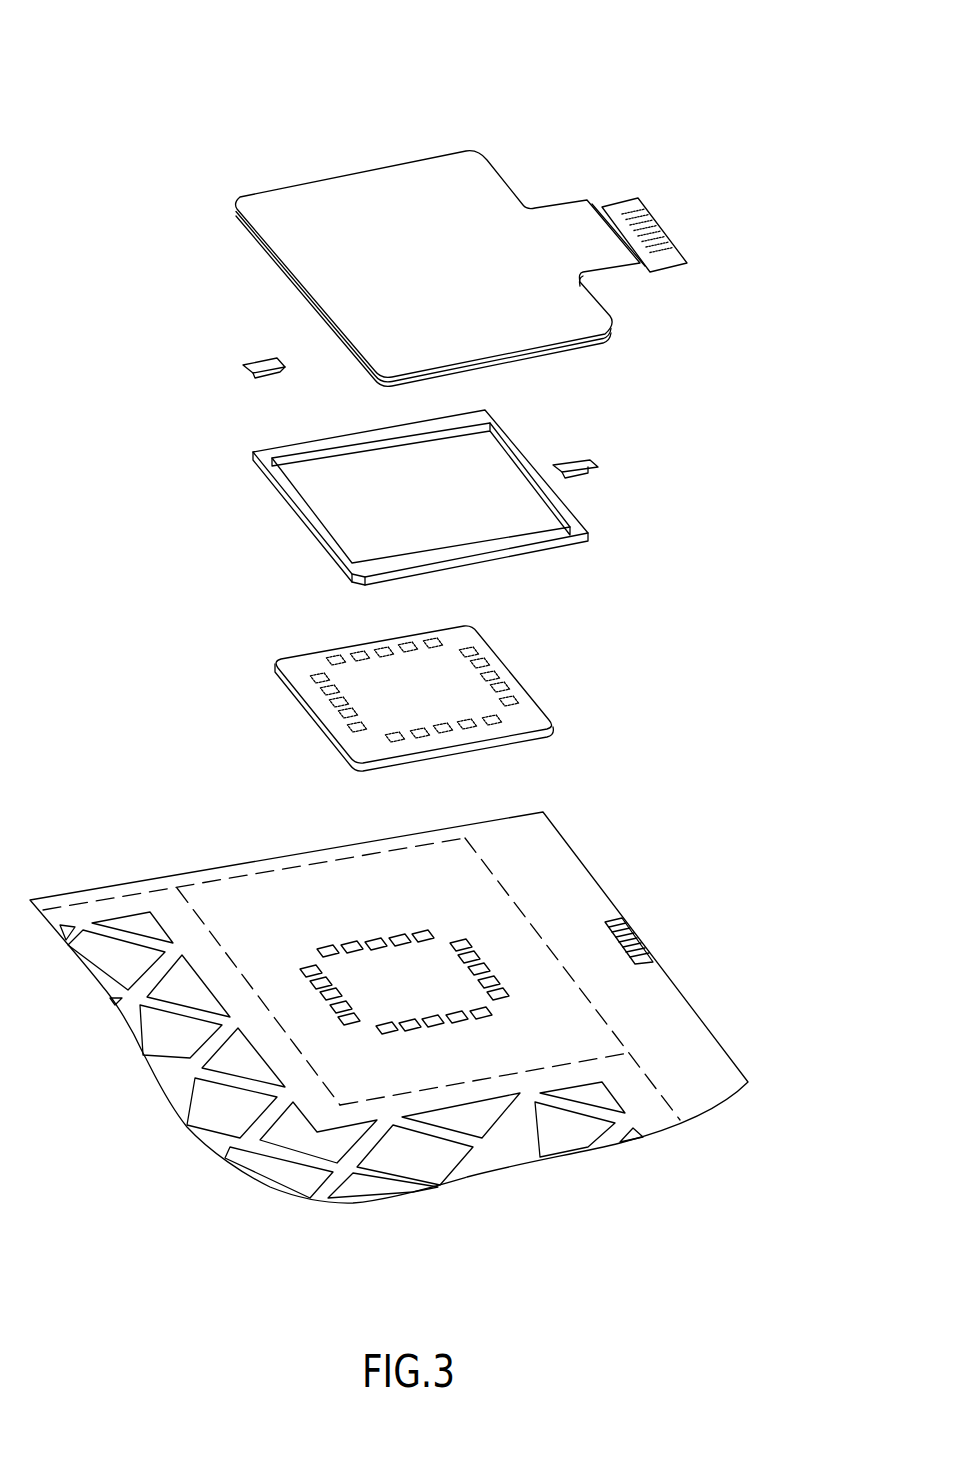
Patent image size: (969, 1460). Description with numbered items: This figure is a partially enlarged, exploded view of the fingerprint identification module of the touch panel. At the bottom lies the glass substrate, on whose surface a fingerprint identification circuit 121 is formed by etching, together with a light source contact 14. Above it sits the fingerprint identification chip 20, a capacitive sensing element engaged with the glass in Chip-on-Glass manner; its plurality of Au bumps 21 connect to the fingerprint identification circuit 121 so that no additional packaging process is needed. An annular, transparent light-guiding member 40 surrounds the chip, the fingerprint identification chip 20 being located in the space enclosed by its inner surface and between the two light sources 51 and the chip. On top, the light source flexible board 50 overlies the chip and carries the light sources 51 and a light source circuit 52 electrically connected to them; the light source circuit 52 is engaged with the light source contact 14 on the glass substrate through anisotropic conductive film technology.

The light source flexible board 50 is at (441, 153).
The light source circuit 52 is at (663, 227).
The light source 51 is at (260, 362).
The light-guiding member 40 is at (596, 528).
The fingerprint identification chip 20 is at (496, 689).
The Au bump 21 is at (501, 718).
The light source contact 14 is at (622, 918).
The fingerprint identification circuit 121 is at (308, 967).